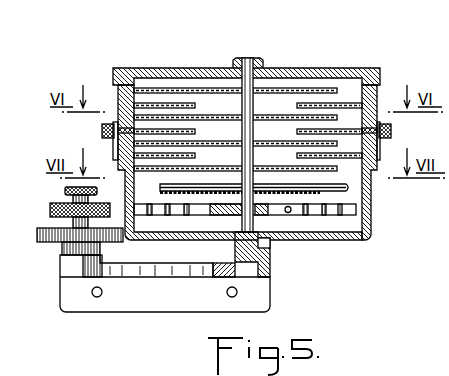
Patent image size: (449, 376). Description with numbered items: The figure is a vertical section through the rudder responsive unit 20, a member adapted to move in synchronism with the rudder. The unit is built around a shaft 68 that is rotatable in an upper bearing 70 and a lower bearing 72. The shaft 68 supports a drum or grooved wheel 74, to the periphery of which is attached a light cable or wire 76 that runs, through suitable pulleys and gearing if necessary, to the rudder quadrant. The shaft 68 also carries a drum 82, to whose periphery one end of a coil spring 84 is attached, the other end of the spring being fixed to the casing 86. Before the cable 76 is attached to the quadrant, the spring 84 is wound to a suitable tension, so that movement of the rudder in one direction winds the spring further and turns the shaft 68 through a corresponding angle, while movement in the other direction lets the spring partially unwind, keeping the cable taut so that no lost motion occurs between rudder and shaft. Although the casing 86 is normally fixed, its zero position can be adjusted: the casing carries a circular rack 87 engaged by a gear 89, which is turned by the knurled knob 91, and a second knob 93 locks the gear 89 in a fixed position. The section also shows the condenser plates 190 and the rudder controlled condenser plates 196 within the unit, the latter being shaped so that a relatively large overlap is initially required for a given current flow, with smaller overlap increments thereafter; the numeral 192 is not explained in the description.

The rudder responsive unit 20 is at (234, 40).
The left heating fins 192 is at (165, 129).
The condenser plates 190 is at (218, 141).
The rudder controlled condenser plates 196 is at (343, 129).
The bearing 70 is at (263, 67).
The shaft 68 is at (259, 102).
The drum or grooved wheel 74 is at (175, 192).
The light cable or wire 76 is at (366, 191).
The casing 86 is at (372, 218).
The coil spring 84 is at (318, 210).
The bearing 72 is at (268, 238).
The drum 82 is at (232, 218).
The circular rack 87 is at (125, 240).
The gear 89 is at (44, 240).
The knurled knob 91 is at (50, 212).
The knob 93 is at (65, 191).